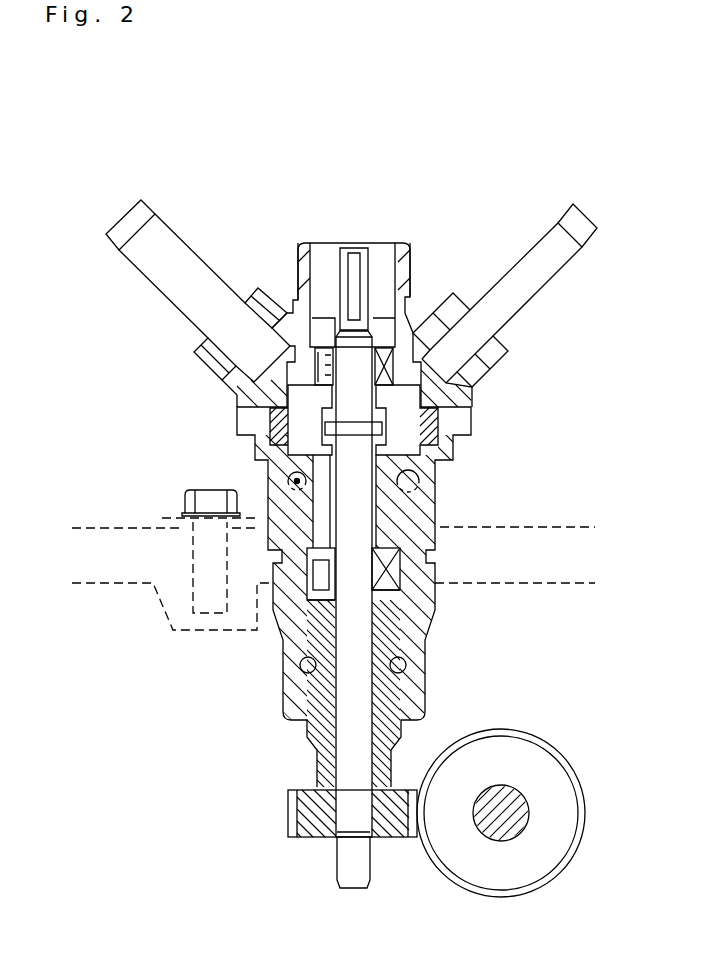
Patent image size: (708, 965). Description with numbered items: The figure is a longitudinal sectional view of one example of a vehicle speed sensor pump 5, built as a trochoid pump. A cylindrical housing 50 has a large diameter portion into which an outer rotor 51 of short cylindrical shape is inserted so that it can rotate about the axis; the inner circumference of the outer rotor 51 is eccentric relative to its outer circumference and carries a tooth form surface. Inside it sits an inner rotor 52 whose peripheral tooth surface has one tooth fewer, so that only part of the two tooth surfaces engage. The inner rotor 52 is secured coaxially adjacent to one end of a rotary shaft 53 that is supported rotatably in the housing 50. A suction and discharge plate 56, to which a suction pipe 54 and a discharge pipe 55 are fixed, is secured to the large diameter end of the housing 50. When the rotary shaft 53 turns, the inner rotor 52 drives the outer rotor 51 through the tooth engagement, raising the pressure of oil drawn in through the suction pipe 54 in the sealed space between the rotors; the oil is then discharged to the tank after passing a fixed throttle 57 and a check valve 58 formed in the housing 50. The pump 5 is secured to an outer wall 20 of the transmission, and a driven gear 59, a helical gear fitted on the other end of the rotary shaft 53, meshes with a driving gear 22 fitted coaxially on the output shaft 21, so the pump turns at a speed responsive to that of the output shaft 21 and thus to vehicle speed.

The vehicle speed sensor pump 5 is at (214, 428).
The outer wall 20 is at (137, 577).
The output shaft 21 is at (557, 785).
The driving gear 22 is at (509, 788).
The housing 50 is at (408, 515).
The outer rotor 51 is at (436, 395).
The inner rotor 52 is at (449, 436).
The rotary shaft 53 is at (415, 584).
The suction pipe 54 is at (196, 272).
The discharge pipe 55 is at (505, 259).
The suction and discharge plate 56 is at (390, 275).
The fixed throttle 57 is at (297, 481).
The check valve 58 is at (425, 487).
The driven gear 59 is at (344, 853).